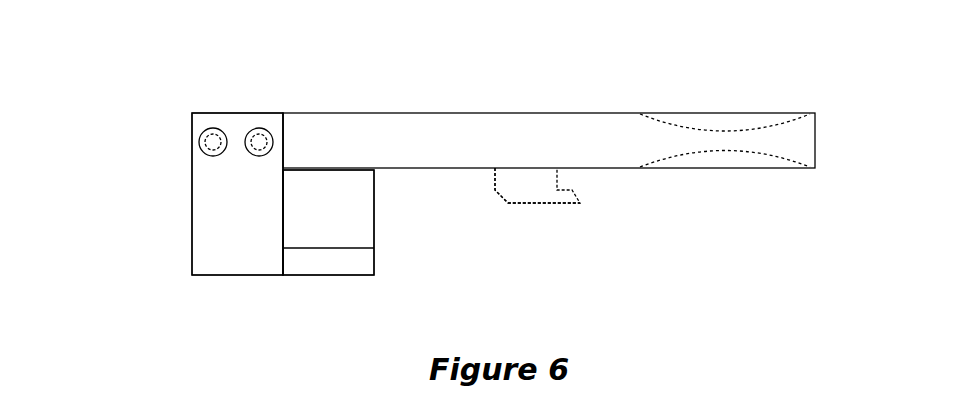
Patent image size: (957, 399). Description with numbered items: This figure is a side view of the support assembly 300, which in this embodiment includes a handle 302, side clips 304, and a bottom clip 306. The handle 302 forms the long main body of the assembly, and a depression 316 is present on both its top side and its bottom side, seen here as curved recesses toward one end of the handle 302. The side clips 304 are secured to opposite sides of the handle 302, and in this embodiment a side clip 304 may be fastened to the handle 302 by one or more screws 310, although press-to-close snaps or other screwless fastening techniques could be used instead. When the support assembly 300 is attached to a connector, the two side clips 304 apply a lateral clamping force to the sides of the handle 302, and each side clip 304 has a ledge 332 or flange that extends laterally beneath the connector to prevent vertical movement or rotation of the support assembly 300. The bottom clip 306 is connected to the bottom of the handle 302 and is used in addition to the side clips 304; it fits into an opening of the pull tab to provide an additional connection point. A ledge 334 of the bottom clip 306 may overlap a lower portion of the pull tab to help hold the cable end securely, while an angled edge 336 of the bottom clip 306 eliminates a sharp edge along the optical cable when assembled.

The support assembly 300 is at (138, 105).
The handle 302 is at (410, 154).
The side clips 304 is at (218, 216).
The bottom clip 306 is at (508, 194).
The screws 310 is at (215, 128).
The depression 316 is at (708, 80).
The ledge 332 is at (318, 285).
The ledge 334 is at (573, 215).
The angled edge 336 is at (498, 202).